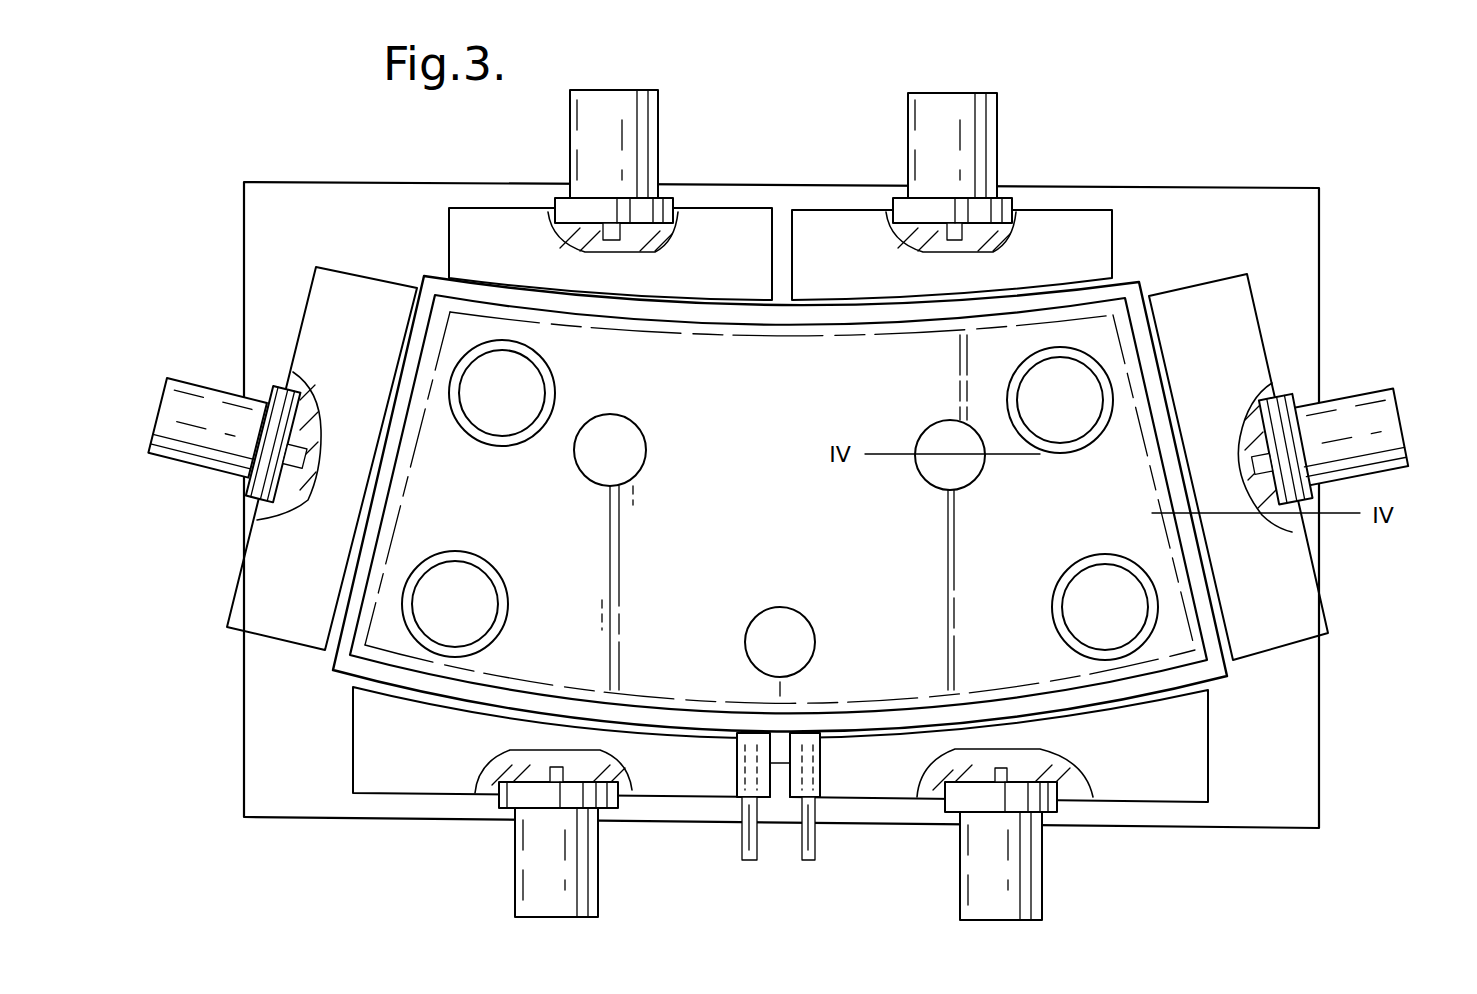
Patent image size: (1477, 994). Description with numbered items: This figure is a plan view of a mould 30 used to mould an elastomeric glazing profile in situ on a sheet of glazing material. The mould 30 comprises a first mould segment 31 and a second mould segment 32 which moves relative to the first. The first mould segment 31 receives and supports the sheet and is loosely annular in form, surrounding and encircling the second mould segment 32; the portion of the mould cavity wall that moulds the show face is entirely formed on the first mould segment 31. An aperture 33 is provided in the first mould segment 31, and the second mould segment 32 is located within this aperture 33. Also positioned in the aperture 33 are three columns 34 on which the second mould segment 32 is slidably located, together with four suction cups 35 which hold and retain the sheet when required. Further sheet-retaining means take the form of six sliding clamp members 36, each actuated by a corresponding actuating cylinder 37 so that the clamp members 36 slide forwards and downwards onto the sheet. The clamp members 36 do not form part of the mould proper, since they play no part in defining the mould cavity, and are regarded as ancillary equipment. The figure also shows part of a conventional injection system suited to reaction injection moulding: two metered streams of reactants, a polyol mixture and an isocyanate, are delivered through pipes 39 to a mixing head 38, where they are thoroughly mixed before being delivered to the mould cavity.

The mould 30 is at (781, 136).
The first mould segment 31 is at (1178, 186).
The second mould segment 32 is at (596, 381).
The aperture 33 is at (1143, 285).
The columns 34 is at (596, 464).
The suction cups 35 is at (488, 407).
The sliding clamp members 36 is at (594, 289).
The actuating cylinders 37 is at (613, 97).
The mixing head 38 is at (820, 754).
The pipes 39 is at (740, 852).